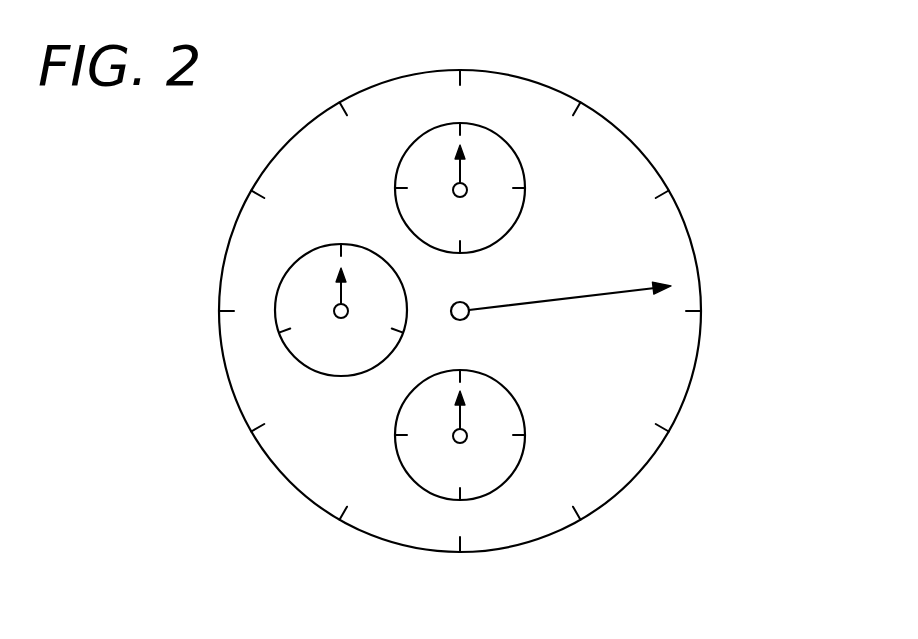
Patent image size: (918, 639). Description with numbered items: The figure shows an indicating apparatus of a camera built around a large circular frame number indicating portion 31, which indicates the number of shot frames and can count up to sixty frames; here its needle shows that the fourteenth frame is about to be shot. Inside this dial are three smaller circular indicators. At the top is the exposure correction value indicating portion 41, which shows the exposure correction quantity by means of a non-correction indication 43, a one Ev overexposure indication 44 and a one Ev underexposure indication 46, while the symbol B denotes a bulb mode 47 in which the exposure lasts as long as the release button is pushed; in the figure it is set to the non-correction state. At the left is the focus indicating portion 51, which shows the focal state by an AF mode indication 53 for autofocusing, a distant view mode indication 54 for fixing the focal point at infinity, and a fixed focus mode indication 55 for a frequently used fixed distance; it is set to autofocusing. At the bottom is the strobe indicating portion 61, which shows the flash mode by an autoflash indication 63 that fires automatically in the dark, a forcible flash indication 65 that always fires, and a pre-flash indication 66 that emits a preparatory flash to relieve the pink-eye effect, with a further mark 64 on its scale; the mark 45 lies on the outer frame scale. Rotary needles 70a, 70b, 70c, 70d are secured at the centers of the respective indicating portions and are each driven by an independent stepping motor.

The frame number indicating portion 31 is at (475, 312).
The exposure correction value indicating portion 41 is at (520, 173).
The non-correction indication 43 is at (486, 73).
The one Ev overexposure indication 44 is at (611, 157).
The scale mark 45 is at (211, 315).
The one Ev underexposure indication 46 is at (333, 146).
The bulb mode 47 is at (586, 238).
The focus indicating portion 51 is at (290, 306).
The AF mode indication 53 is at (285, 193).
The infinity mark 54 is at (336, 414).
The fixed focus mode indication 55 is at (213, 355).
The strobe indicating portion 61 is at (566, 435).
The autoflash indication 63 is at (597, 361).
The C mark 64 is at (616, 458).
The forcible flash indication 65 is at (423, 555).
The pre-flash indication 66 is at (323, 483).
The rotary needle 70a is at (628, 288).
The rotary needle 70b is at (518, 121).
The rotary needle 70c is at (242, 293).
The rotary needle 70d is at (528, 488).